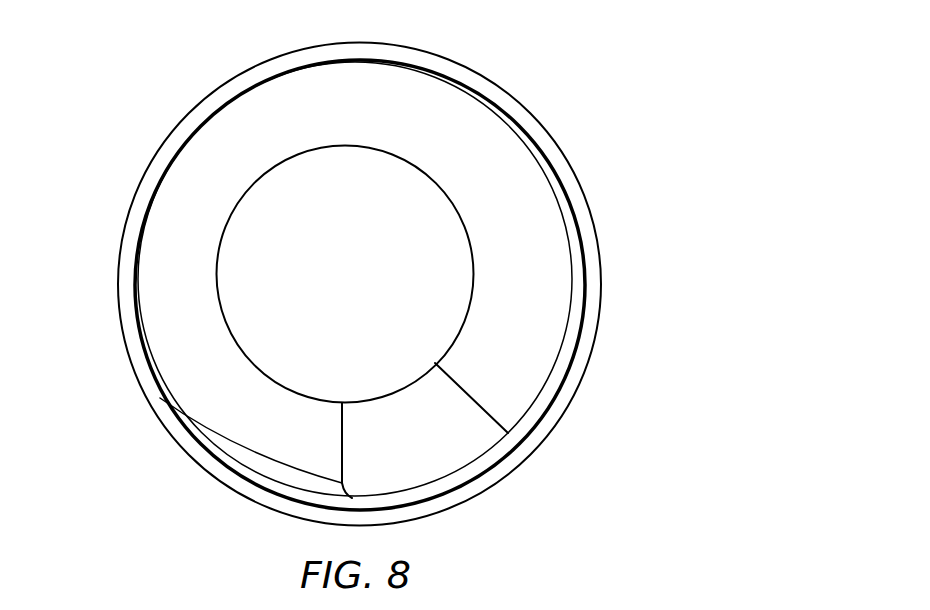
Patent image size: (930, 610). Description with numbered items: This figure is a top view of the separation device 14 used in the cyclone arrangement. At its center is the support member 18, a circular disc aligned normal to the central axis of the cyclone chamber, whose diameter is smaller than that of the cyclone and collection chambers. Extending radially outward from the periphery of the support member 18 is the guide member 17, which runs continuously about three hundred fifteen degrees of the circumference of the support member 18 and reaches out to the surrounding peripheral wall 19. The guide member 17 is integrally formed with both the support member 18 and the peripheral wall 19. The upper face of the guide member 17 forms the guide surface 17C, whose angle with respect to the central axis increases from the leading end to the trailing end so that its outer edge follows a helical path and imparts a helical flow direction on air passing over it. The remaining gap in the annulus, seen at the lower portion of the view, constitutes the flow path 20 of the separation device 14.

The separation device 14 is at (383, 265).
The guide member 17 is at (374, 285).
The guide surface 17C is at (535, 207).
The support member 18 is at (413, 198).
The peripheral wall 19 is at (601, 298).
The flow path 20 is at (452, 450).